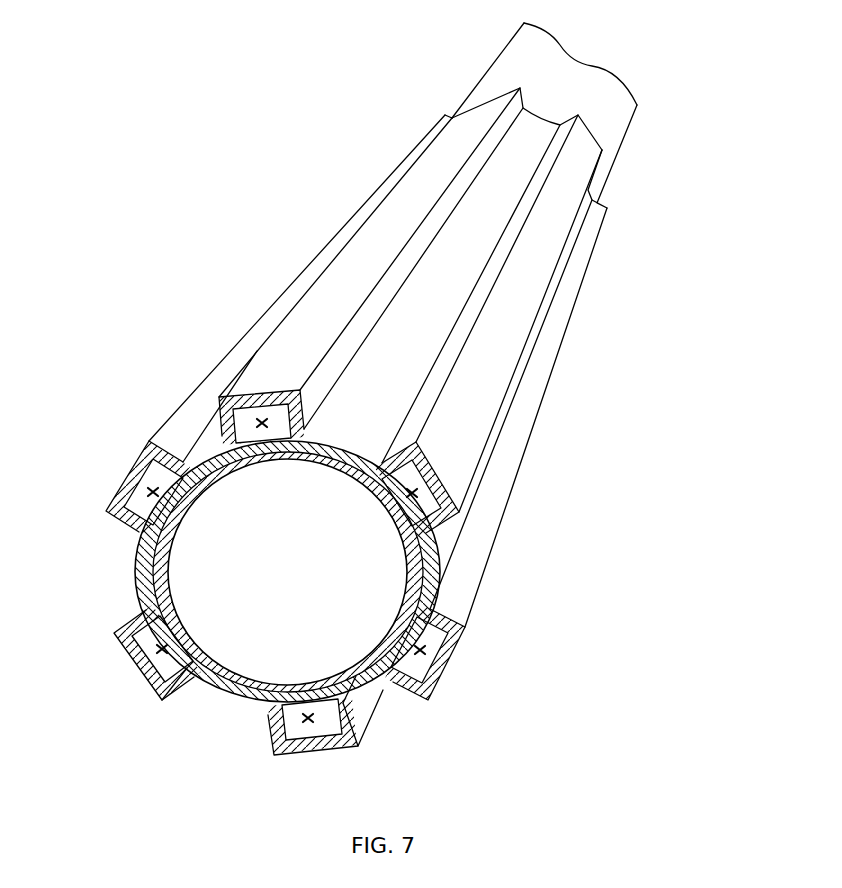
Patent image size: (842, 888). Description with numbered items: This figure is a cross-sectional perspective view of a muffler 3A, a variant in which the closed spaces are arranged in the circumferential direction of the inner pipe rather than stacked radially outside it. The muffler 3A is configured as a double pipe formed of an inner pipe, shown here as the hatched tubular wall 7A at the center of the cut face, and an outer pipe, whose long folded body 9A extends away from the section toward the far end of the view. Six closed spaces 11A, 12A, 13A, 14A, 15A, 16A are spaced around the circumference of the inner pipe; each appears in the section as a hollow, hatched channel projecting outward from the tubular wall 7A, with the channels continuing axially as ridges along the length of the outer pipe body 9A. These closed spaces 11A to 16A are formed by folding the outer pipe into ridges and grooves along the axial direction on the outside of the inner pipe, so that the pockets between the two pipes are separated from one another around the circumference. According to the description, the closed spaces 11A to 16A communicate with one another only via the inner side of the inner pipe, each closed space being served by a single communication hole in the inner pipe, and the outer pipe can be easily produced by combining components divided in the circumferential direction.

The muffler 3A is at (686, 63).
The tubular wall 7A is at (180, 512).
The rib / fin 9A is at (355, 274).
The closed space 11A is at (258, 418).
The closed space 12A is at (412, 493).
The closed space 13A is at (420, 650).
The closed space 14A is at (308, 718).
The closed space 15A is at (160, 649).
The closed space 16A is at (148, 493).